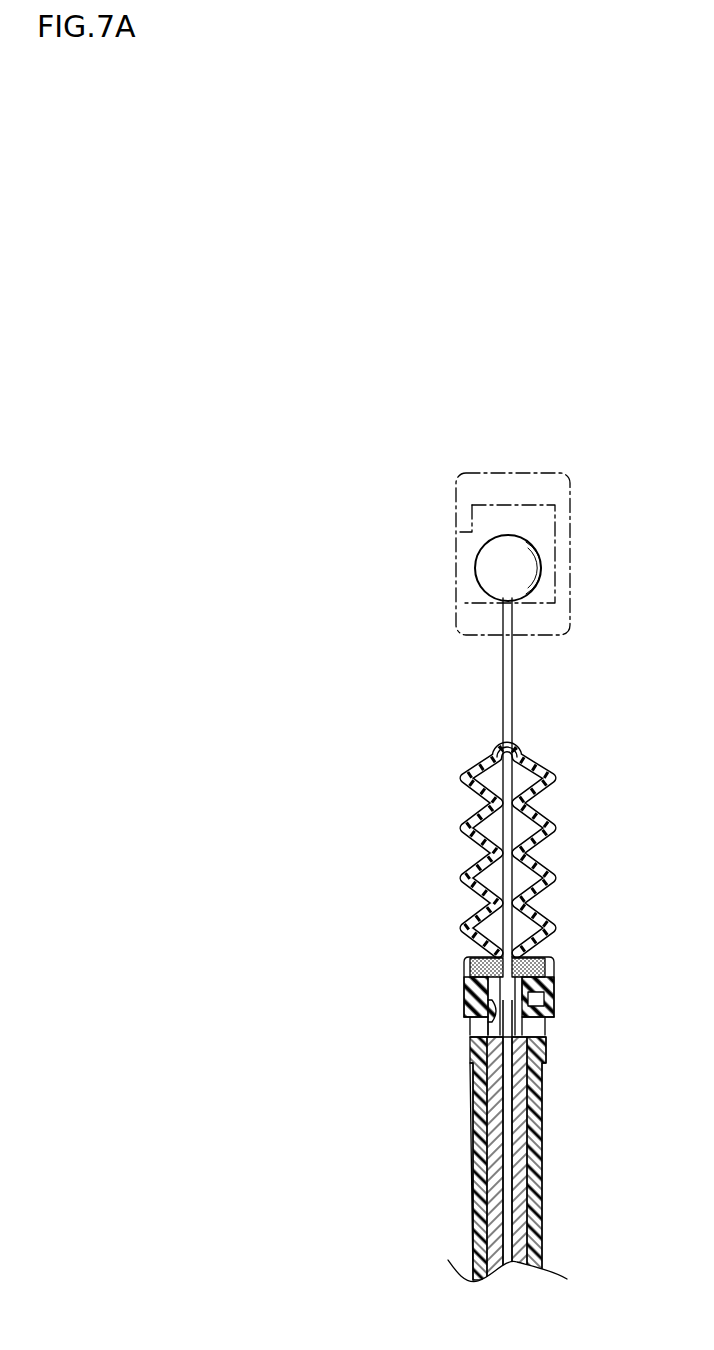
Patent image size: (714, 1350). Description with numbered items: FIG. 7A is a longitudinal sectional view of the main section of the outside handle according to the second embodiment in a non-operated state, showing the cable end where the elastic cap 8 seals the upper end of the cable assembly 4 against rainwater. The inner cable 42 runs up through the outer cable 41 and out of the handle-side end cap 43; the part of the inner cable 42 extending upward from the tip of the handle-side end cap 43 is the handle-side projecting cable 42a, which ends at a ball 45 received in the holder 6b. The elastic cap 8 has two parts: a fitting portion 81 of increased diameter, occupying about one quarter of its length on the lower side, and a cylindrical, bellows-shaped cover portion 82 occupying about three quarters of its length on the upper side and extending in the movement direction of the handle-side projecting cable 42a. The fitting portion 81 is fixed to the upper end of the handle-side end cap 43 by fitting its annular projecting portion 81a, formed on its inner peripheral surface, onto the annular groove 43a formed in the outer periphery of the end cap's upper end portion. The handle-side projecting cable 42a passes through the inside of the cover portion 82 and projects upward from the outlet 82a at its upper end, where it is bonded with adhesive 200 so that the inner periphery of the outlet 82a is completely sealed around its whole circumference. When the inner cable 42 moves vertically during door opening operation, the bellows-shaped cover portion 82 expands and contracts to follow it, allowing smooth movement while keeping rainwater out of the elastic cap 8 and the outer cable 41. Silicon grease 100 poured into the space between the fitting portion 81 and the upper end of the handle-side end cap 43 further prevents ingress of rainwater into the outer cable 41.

The holder 6b is at (537, 472).
The ball 45 is at (475, 558).
The adhesive 200 is at (512, 777).
The cover portion 82 is at (554, 781).
The outlet 82a is at (516, 747).
The handle-side projecting cable 42a is at (520, 824).
The silicon grease 100 is at (470, 962).
The elastic cap 8 is at (514, 992).
The fitting portion 81 is at (439, 1025).
The annular projecting portion 81a is at (488, 1022).
The annular groove 43a is at (553, 1003).
The tube 4 is at (507, 1119).
The handle-side end cap 43 is at (473, 1165).
The outer cable 41 is at (527, 1152).
The inner cable 42 is at (508, 1217).